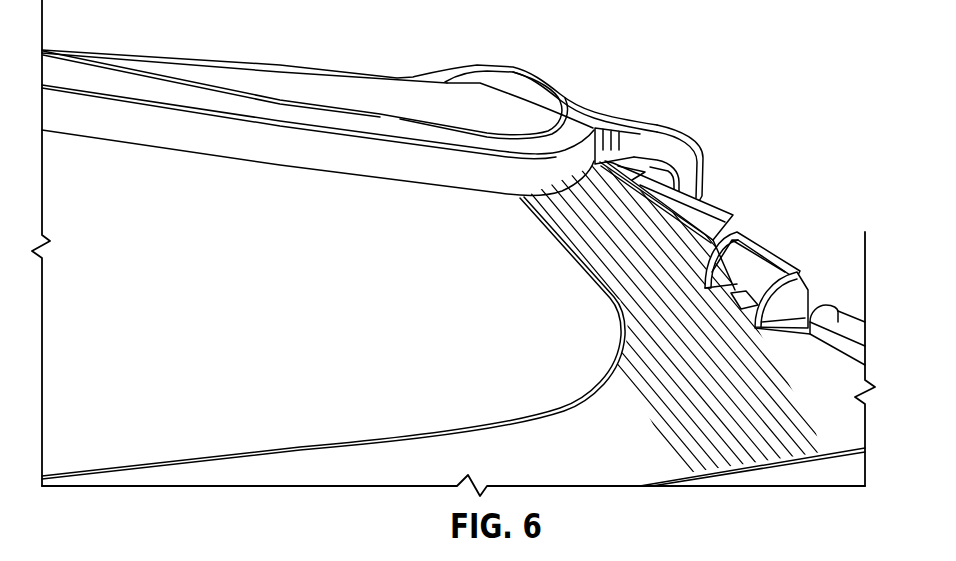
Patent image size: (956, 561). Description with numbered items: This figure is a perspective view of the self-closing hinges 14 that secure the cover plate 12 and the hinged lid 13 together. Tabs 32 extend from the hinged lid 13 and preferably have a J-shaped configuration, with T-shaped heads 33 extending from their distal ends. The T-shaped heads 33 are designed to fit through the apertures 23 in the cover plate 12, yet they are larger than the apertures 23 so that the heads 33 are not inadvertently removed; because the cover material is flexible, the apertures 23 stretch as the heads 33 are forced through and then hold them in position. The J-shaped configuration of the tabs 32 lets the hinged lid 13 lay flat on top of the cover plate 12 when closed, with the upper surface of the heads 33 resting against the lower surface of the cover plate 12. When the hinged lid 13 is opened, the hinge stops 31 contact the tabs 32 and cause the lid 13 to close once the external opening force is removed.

The cover plate 12 is at (530, 438).
The hinged lid 13 is at (398, 80).
The self-closing hinges 14 is at (803, 269).
The apertures 23 is at (736, 306).
The hinge stops 31 is at (760, 251).
The tabs 32 is at (640, 119).
The T-shaped heads 33 is at (724, 206).